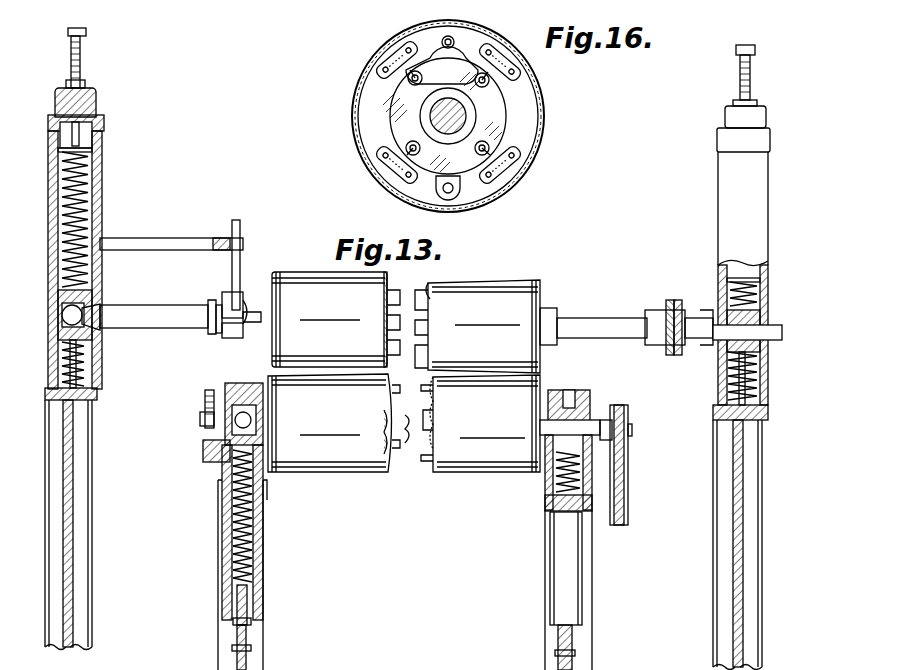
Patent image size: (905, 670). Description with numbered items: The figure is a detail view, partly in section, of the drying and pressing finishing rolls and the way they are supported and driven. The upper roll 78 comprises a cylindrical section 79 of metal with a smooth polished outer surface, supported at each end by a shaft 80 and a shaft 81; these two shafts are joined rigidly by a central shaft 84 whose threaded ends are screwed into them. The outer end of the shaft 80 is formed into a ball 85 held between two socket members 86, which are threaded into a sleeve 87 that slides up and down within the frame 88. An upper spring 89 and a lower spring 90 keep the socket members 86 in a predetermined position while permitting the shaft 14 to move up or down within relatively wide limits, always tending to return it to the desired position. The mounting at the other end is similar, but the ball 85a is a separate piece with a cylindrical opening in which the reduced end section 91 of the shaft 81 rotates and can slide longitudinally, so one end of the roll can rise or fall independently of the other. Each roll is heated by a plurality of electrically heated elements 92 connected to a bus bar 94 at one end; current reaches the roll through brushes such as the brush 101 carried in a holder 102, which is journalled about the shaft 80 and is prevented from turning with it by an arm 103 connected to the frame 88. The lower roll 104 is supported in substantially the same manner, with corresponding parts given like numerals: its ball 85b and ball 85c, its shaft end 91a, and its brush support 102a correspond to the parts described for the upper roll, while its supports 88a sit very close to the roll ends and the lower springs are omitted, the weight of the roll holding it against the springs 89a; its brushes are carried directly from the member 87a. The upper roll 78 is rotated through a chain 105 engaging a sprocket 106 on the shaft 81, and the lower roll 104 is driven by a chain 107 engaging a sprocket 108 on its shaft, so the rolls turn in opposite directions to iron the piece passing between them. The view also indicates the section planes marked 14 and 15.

In FIG. 13, the shaft 14 is at (180, 345).
In FIG. 13, the section line 15 is at (193, 420).
In FIG. 16, the upper roll 78 is at (385, 48).
In FIG. 13, the upper roll 78 is at (508, 280).
In FIG. 16, the cylindrical section 79 is at (512, 50).
In FIG. 13, the cylindrical section 79 is at (444, 284).
In FIG. 13, the shaft 80 is at (135, 312).
In FIG. 13, the shaft 81 is at (599, 313).
In FIG. 16, the central shaft 84 is at (462, 116).
In FIG. 13, the ball 85 is at (84, 328).
In FIG. 13, the ball 85a is at (726, 353).
In FIG. 13, the ball 85b is at (246, 410).
In FIG. 13, the socket 85c is at (588, 381).
In FIG. 13, the socket members 86 is at (57, 318).
In FIG. 13, the sleeve 87 is at (54, 250).
In FIG. 13, the member 87a is at (232, 385).
In FIG. 13, the frame 88 is at (50, 208).
In FIG. 13, the supports 88a is at (222, 490).
In FIG. 13, the upper spring 89 is at (90, 214).
In FIG. 13, the springs 89a is at (250, 528).
In FIG. 13, the lower spring 90 is at (80, 384).
In FIG. 13, the reduced end section 91 is at (714, 340).
In FIG. 13, the pin 91a is at (548, 428).
In FIG. 16, the electrically heated elements 92 is at (382, 148).
In FIG. 16, the bus bar 94 is at (395, 110).
In FIG. 13, the brush 101 is at (262, 332).
In FIG. 13, the holder 102 is at (240, 292).
In FIG. 13, the lever 102a is at (210, 452).
In FIG. 13, the arm 103 is at (195, 238).
In FIG. 13, the lower roll 104 is at (337, 478).
In FIG. 13, the chain 105 is at (682, 312).
In FIG. 13, the sprocket 106 is at (670, 309).
In FIG. 13, the chain 107 is at (624, 492).
In FIG. 13, the sprocket 108 is at (606, 420).